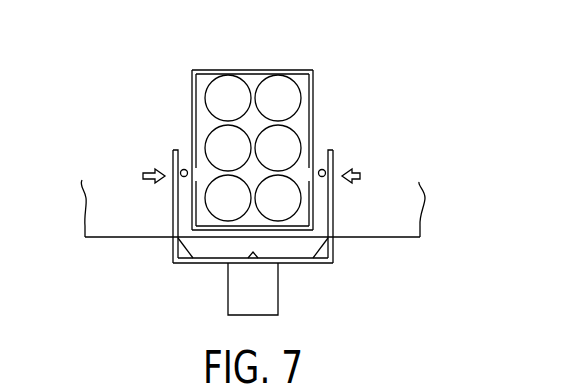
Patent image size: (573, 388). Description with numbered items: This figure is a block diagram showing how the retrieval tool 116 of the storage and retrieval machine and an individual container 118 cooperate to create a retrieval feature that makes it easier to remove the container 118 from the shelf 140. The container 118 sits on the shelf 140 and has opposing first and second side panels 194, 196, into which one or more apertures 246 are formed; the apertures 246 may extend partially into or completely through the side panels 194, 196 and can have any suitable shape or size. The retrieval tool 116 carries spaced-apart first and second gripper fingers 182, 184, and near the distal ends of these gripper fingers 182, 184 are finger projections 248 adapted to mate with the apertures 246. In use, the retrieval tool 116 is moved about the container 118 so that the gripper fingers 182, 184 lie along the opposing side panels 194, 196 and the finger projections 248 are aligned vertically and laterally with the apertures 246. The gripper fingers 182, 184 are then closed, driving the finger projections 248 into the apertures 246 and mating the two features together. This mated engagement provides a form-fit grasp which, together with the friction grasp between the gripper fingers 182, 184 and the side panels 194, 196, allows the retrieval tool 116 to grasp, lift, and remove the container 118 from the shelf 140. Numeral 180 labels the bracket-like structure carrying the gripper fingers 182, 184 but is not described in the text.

The retrieval tool 116 is at (295, 280).
The container 118 is at (257, 69).
The shelf 140 is at (137, 228).
The bracket 180 is at (208, 266).
The first gripper finger 182 is at (333, 200).
The second gripper finger 184 is at (172, 205).
The first side panel 194 is at (315, 84).
The second side panel 196 is at (191, 84).
The aperture 246 is at (187, 170).
The finger projection 248 is at (174, 167).